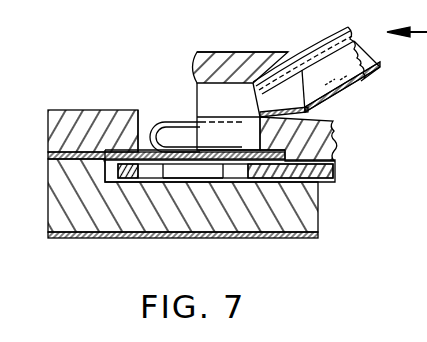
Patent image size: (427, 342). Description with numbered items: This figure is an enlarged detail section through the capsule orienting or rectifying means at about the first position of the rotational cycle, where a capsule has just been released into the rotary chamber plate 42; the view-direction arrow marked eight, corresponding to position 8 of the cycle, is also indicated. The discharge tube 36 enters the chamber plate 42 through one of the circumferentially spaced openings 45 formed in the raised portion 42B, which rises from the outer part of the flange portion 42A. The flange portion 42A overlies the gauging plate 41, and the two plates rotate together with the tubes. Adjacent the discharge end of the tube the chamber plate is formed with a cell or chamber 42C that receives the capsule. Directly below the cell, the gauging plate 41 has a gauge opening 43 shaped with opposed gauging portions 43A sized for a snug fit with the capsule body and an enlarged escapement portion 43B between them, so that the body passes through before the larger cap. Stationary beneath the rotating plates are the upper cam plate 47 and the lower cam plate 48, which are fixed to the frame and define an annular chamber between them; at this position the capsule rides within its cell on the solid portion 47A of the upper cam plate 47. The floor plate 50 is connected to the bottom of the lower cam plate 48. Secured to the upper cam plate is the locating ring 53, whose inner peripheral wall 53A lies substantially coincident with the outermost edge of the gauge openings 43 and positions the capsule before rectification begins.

The position 8 is at (397, 32).
The discharge tube 36 is at (356, 93).
The gauging plate 41 is at (333, 183).
The chamber plate 42 is at (267, 47).
The flange portion 42A is at (337, 129).
The raised portion 42B is at (232, 52).
The cell or chamber 42C is at (195, 54).
The gauge opening 43 is at (119, 186).
The gauging portion 43A is at (157, 173).
The escapement portion 43B is at (188, 173).
The opening 45 is at (308, 63).
The upper cam plate 47 is at (48, 155).
The solid portion 47A is at (148, 133).
The lower cam plate 48 is at (47, 188).
The floor plate 50 is at (313, 238).
The locating ring 53 is at (78, 110).
The inner peripheral wall 53A is at (140, 118).